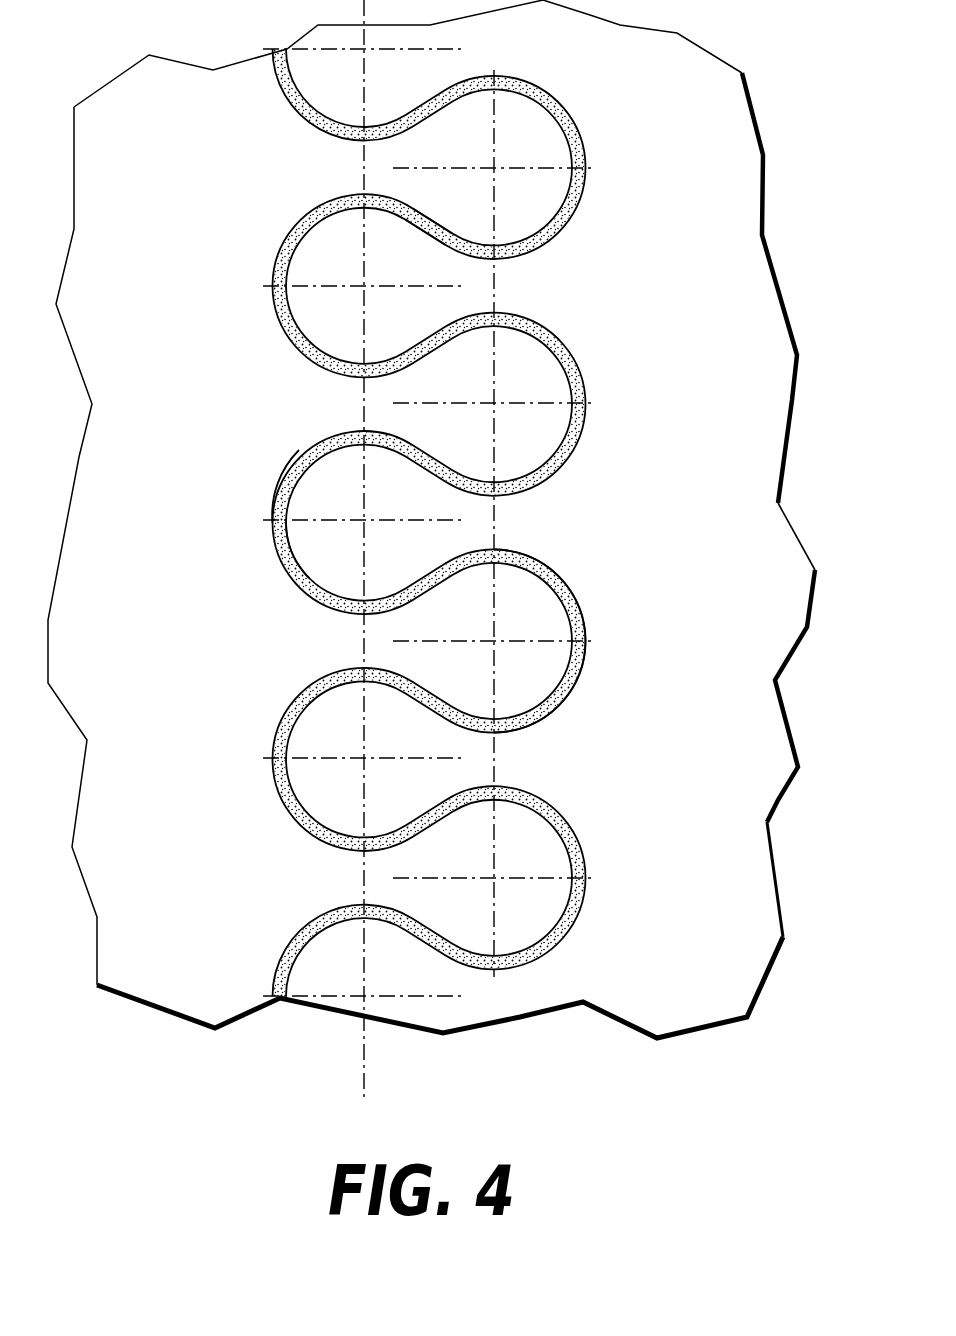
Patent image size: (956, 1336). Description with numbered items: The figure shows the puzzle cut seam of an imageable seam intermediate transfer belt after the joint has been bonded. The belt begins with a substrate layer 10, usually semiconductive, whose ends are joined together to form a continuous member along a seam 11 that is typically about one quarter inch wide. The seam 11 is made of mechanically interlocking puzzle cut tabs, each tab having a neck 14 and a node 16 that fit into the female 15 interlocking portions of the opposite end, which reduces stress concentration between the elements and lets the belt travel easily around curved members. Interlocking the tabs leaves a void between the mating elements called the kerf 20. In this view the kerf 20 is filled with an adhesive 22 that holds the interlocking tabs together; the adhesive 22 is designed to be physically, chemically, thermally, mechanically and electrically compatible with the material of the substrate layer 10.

The substrate layer 10 is at (762, 313).
The seam 11 is at (444, 548).
The neck 14 is at (488, 282).
The female interlocking portions 15 is at (289, 471).
The node 16 is at (310, 580).
The kerf 20 is at (550, 570).
The adhesive 22 is at (543, 717).